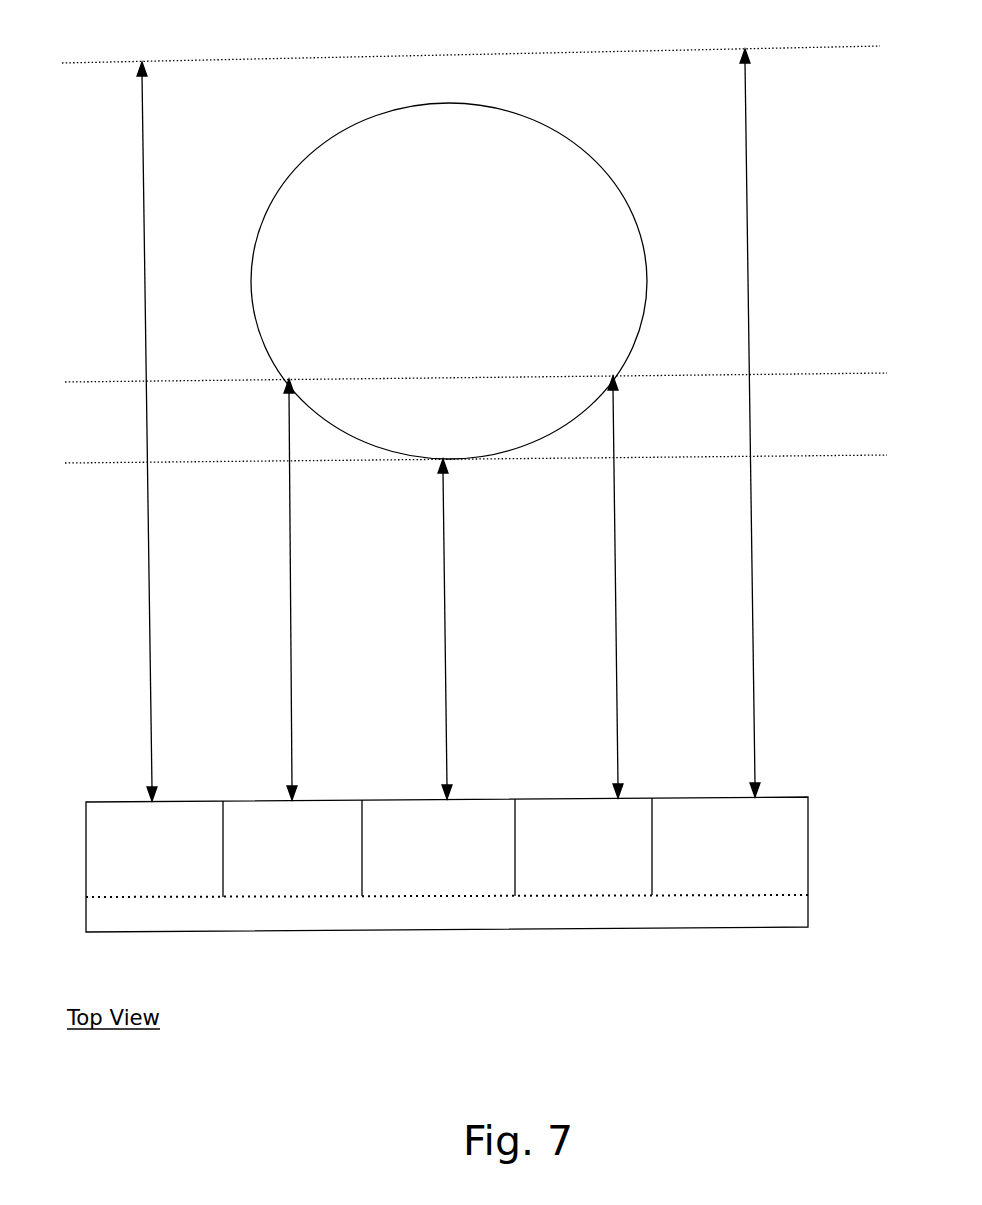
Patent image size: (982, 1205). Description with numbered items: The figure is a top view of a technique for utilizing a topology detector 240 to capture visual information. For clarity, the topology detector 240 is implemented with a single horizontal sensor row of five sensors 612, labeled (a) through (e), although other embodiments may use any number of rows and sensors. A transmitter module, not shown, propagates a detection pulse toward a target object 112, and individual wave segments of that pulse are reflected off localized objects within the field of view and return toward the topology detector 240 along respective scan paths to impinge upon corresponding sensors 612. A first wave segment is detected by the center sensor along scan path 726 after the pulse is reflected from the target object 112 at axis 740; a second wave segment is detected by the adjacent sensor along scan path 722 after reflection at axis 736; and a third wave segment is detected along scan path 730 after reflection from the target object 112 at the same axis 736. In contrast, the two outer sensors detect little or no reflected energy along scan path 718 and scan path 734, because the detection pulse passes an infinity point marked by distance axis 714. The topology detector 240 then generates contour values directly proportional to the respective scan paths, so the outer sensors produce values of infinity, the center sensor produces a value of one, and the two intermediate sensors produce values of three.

The distance axis 714 is at (193, 61).
The axis 736 is at (806, 375).
The axis 740 is at (117, 464).
The target object 112 is at (611, 183).
The scan path 718 is at (152, 648).
The scan path 722 is at (292, 663).
The scan path 726 is at (445, 660).
The scan path 730 is at (617, 676).
The scan path 734 is at (755, 668).
The sensors 612 is at (429, 847).
The topology detector 240 is at (447, 908).